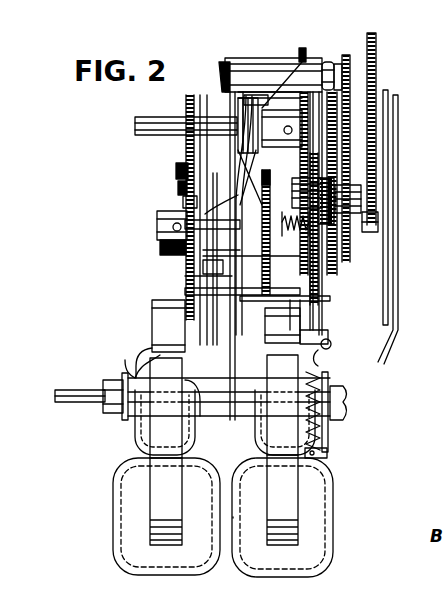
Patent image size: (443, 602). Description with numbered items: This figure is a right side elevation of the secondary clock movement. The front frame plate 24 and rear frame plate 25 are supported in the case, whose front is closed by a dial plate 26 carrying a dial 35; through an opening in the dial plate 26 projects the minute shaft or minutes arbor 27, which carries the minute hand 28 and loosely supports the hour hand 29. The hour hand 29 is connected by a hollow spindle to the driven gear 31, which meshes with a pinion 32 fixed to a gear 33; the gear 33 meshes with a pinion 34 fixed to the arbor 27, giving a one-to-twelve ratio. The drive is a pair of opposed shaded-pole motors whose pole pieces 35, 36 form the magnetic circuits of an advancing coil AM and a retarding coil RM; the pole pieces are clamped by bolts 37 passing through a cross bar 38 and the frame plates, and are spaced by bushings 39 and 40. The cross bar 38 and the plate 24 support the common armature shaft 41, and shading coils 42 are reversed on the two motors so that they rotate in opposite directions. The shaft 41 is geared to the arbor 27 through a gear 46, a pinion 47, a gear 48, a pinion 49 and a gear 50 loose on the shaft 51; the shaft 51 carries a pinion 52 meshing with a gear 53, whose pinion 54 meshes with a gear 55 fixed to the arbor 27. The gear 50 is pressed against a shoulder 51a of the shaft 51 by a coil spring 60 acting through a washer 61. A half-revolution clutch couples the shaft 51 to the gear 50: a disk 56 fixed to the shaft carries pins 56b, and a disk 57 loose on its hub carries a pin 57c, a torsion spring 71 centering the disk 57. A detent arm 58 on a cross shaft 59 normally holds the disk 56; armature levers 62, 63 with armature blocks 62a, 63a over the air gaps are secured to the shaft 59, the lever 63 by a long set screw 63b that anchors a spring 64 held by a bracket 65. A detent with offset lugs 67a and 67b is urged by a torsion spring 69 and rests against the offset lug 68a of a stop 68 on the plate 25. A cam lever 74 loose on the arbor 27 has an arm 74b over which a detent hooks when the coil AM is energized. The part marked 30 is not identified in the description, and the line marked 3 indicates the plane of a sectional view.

The section line 3- 3 is at (205, 32).
The front frame plate 24 is at (328, 62).
The rear frame plate 25 is at (238, 100).
The dial plate 26 is at (347, 348).
The minute shaft (minutes arbor) 27 is at (160, 125).
The minute hand 28 is at (399, 216).
The hour hand 29 is at (389, 200).
The rack 30 is at (353, 110).
The driven gear 31 is at (343, 75).
The pinion 32 is at (372, 234).
The gear 33 is at (333, 258).
The pinion 34 is at (316, 85).
The pole pieces of forward drive motor 35 is at (378, 72).
The pole pieces of reverse drive motor 36 is at (287, 485).
The bolts 37 is at (116, 414).
The cross bar 38 is at (123, 377).
The bushings 39 is at (137, 435).
The bushings 40 is at (237, 422).
The armature shaft 41 is at (68, 398).
The shading coils 42 is at (130, 362).
The gear 46 is at (185, 322).
The pinion 47 is at (264, 333).
The gear 48 is at (195, 293).
The pinion 49 is at (278, 297).
The gear 50 is at (265, 176).
The shaft 51 is at (156, 231).
The enlargement or shoulder 51a is at (250, 195).
The pinion 52 is at (320, 266).
The gear 53 is at (314, 96).
The pinion 54 is at (338, 220).
The gear 55 is at (302, 50).
The disk 56 is at (200, 283).
The pins 56b is at (178, 188).
The disk 57 is at (188, 160).
The pin 57c is at (176, 170).
The detent arm 58 is at (203, 268).
The cross shaft 59 is at (300, 340).
The coil spring 60 is at (291, 242).
The washer 61 is at (292, 200).
The armature lever 62 is at (166, 451).
The armature block 62a is at (150, 342).
The armature lever 63 is at (282, 450).
The armature block 63a is at (302, 326).
The set screw 63b is at (333, 342).
The spring 64 is at (322, 440).
The bracket 65 is at (328, 430).
The offset lug 67a is at (185, 223).
The offset lug 67b is at (185, 276).
The stop 68 is at (221, 202).
The offset lug 68a is at (183, 203).
The torsion spring 69 is at (206, 418).
The torsion spring 71 is at (242, 120).
The cam lever 74 is at (222, 68).
The arm 74b is at (262, 100).
The advancing motor coil AM is at (124, 546).
The retarding motor coil RM is at (334, 541).